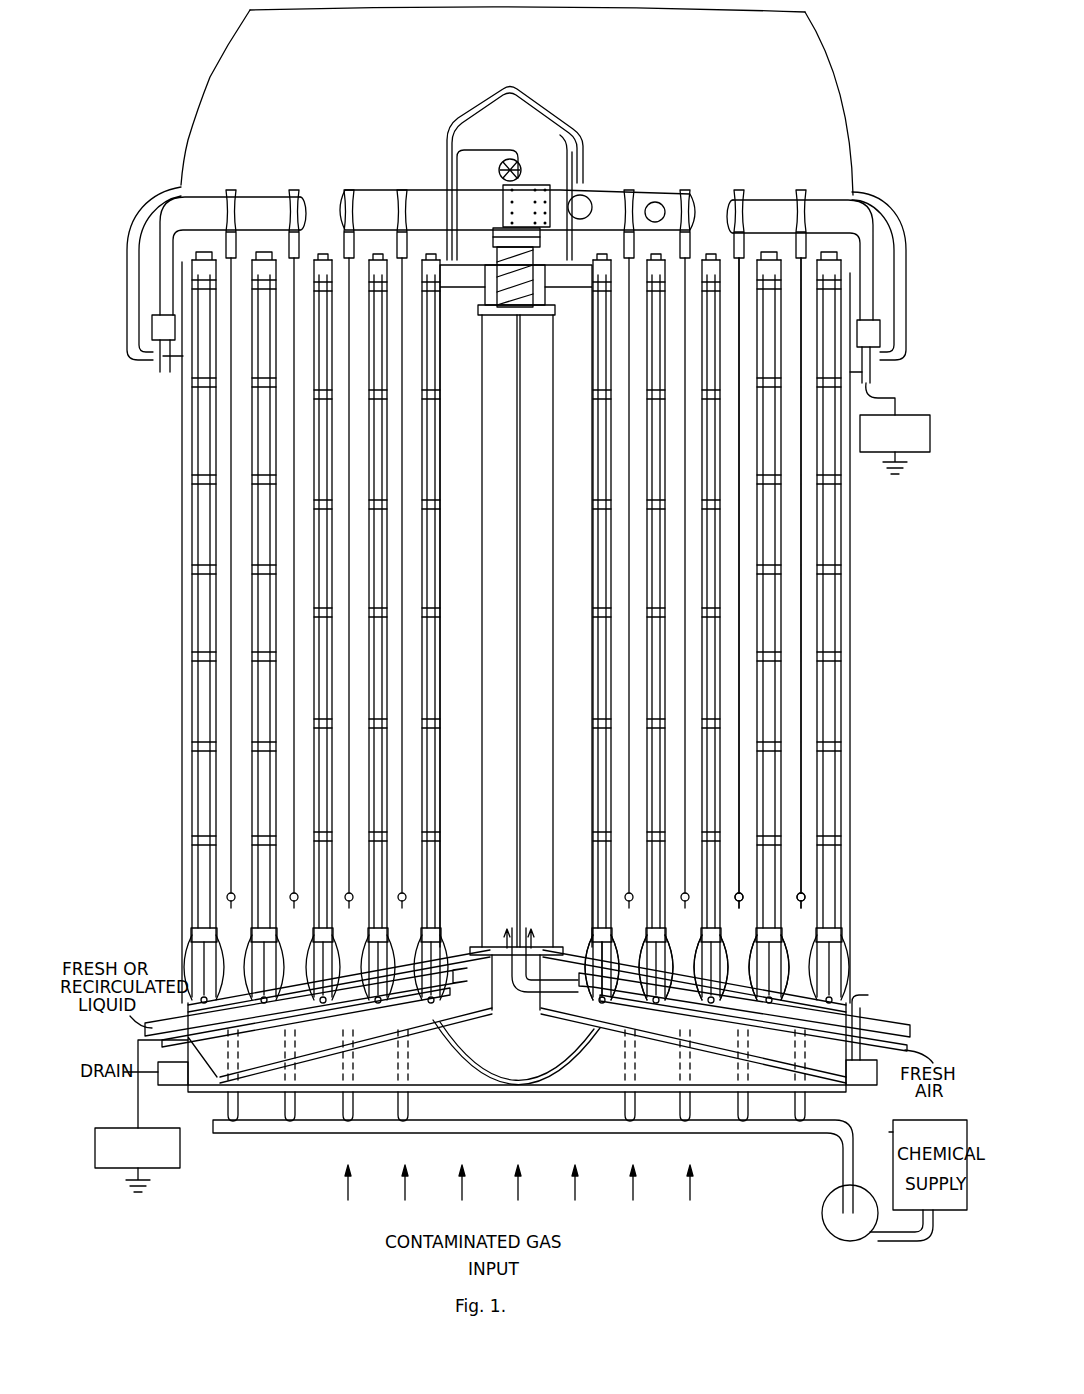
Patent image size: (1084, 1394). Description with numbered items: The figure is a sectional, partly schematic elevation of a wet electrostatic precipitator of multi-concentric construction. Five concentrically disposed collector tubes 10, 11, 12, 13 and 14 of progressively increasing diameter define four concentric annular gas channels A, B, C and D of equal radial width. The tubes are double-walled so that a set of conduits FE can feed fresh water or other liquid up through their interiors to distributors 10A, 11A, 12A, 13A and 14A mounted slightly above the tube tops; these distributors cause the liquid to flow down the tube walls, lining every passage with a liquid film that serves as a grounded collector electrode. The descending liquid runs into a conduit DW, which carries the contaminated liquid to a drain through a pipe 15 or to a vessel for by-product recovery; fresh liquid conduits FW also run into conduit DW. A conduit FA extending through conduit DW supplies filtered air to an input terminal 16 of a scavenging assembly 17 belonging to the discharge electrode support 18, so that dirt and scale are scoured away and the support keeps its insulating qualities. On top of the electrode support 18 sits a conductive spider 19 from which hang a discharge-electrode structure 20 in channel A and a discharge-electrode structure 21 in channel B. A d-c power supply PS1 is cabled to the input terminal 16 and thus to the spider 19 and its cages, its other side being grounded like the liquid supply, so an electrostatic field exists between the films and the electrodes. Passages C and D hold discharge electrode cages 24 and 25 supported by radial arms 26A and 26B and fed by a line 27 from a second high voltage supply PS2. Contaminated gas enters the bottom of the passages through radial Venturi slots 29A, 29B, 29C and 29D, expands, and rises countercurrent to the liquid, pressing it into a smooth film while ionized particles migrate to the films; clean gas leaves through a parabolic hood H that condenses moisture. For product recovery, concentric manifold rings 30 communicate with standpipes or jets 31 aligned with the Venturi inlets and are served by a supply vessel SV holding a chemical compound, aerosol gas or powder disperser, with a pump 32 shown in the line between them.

The hood H is at (221, 76).
The radial arm 26B is at (281, 200).
The radial arm 26A is at (771, 212).
The conductive spider 19 is at (593, 197).
The discharge electrode support 18 is at (495, 238).
The scavenging assembly 17 is at (546, 297).
The input terminal 16 is at (512, 320).
The tube 10 is at (432, 787).
The tube 11 is at (381, 745).
The tube 12 is at (327, 685).
The tube 13 is at (263, 688).
The tube 14 is at (210, 716).
The distributor 10A is at (601, 268).
The distributor 11A is at (655, 268).
The distributor 12A is at (711, 268).
The distributor 13A is at (769, 268).
The distributor 14A is at (831, 268).
The discharge-electrode structure 20 is at (626, 421).
The discharge-electrode structure 21 is at (683, 441).
The discharge electrode cage 24 is at (741, 515).
The discharge electrode cage 25 is at (803, 540).
The line 27 is at (893, 398).
The high voltage supply PS2 is at (931, 415).
The d-c power supply PS1 is at (180, 1168).
The annular gas channel A is at (626, 800).
The annular gas channel B is at (684, 800).
The annular gas channel C is at (736, 800).
The annular gas channel D is at (797, 800).
The conduits FE is at (605, 906).
The radial Venturi slot 29A is at (614, 950).
The radial Venturi slot 29B is at (672, 950).
The radial Venturi slot 29C is at (727, 950).
The radial Venturi slot 29D is at (783, 950).
The fresh liquid conduit FW is at (175, 1022).
The conduit FA is at (670, 1008).
The conduit DW is at (420, 1022).
The pipe 15 is at (165, 1087).
The standpipes or jets 31 is at (685, 1108).
The concentric manifold rings 30 is at (588, 1125).
The pump 32 is at (832, 1224).
The supply vessel SV is at (893, 1132).